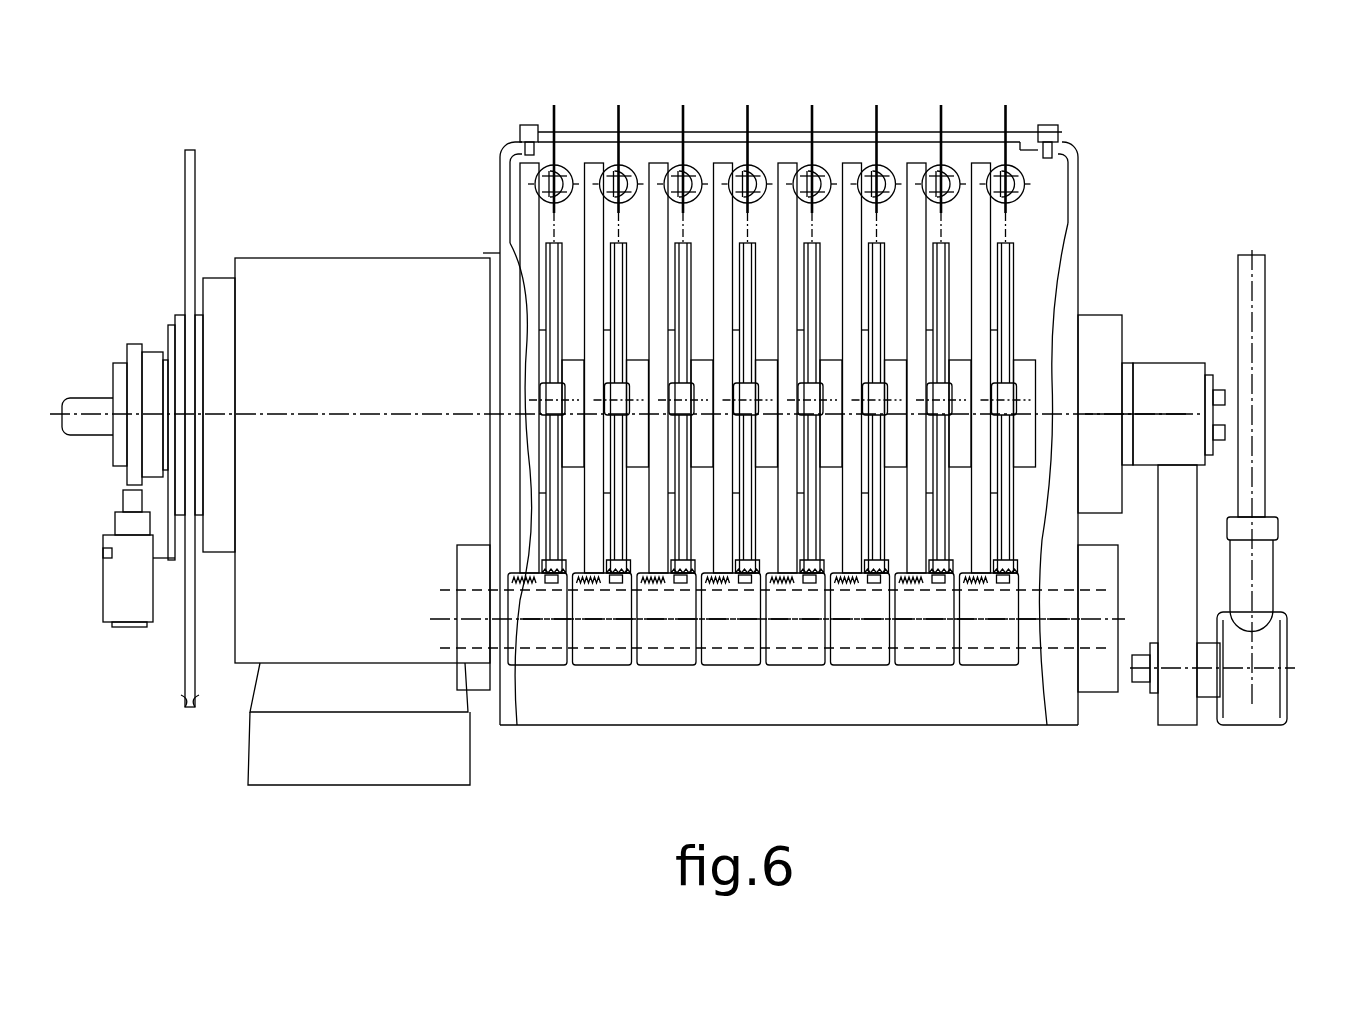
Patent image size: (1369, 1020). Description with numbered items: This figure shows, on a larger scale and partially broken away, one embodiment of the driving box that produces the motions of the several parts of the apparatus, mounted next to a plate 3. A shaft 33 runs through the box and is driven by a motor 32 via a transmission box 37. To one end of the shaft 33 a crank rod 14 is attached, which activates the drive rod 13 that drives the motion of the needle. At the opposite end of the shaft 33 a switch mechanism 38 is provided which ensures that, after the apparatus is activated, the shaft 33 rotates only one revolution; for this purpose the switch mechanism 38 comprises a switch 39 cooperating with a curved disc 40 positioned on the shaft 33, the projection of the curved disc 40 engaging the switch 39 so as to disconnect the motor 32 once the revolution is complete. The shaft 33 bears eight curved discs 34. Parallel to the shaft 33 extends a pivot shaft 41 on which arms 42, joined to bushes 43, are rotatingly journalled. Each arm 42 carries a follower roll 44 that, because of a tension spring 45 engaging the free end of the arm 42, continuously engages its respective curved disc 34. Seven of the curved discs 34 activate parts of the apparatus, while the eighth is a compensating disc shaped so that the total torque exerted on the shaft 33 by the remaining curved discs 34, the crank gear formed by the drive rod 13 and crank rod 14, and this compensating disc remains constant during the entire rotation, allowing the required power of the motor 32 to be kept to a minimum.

The mounting plate 3 is at (197, 186).
The drive rod 13 is at (1258, 465).
The crank rod 14 is at (1178, 516).
The motor 32 is at (450, 765).
The shaft 33 is at (348, 410).
The curved discs 34 is at (943, 277).
The transmission box 37 is at (235, 638).
The switch mechanism 38 is at (112, 479).
The switch 39 is at (112, 562).
The curved disc 40 is at (137, 348).
The pivot shaft 41 is at (978, 670).
The arms 42 is at (658, 180).
The bushes 43 is at (872, 667).
The follower roll 44 is at (756, 406).
The tension spring 45 is at (965, 177).